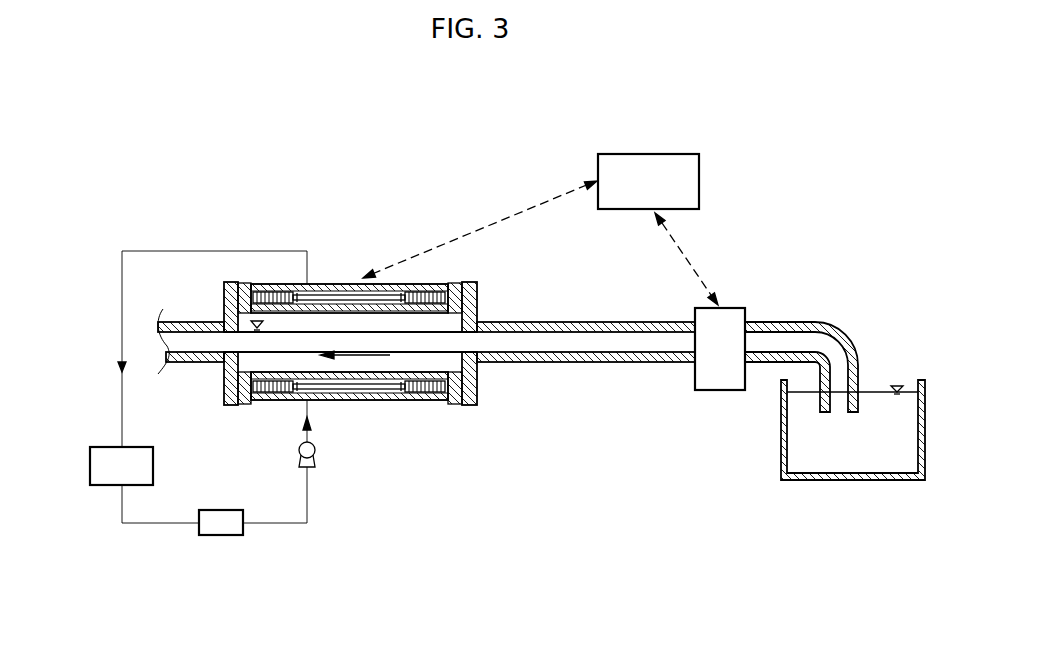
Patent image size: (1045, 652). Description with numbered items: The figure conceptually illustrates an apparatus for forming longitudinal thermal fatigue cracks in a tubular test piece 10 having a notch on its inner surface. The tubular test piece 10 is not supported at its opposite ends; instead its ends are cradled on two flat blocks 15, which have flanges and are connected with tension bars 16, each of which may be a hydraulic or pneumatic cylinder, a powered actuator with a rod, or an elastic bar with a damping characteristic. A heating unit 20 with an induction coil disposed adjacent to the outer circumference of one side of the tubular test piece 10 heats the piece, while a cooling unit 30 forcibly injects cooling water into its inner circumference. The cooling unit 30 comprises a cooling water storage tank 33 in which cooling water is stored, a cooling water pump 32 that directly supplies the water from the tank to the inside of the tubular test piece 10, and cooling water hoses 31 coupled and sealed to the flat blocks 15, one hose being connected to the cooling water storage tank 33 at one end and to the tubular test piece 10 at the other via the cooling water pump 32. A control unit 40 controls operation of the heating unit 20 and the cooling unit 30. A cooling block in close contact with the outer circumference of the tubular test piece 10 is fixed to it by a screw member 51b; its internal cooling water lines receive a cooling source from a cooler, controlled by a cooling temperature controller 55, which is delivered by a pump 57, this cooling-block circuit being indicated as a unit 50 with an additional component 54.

The tubular test piece 10 is at (275, 288).
The flat block 15 is at (245, 283).
The tension bar 16 is at (417, 290).
The heating unit 20 is at (422, 400).
The cooling unit 30 is at (698, 470).
The cooling water hose 31 is at (196, 362).
The cooling water pump 32 is at (715, 390).
The cooling water storage tank 33 is at (781, 466).
The control unit 40 is at (699, 178).
The cooling unit 50 is at (112, 546).
The screw member 51b is at (341, 290).
The heat exchanger 54 is at (147, 473).
The cooling temperature controller 55 is at (225, 536).
The pump 57 is at (315, 455).